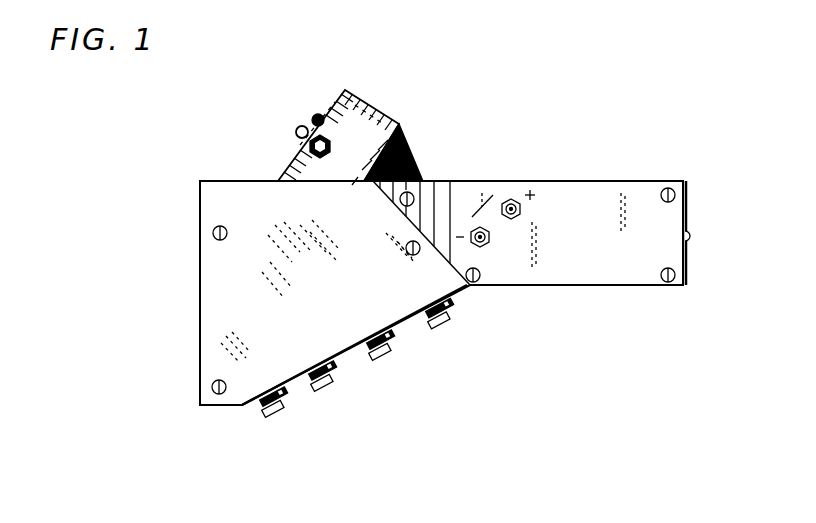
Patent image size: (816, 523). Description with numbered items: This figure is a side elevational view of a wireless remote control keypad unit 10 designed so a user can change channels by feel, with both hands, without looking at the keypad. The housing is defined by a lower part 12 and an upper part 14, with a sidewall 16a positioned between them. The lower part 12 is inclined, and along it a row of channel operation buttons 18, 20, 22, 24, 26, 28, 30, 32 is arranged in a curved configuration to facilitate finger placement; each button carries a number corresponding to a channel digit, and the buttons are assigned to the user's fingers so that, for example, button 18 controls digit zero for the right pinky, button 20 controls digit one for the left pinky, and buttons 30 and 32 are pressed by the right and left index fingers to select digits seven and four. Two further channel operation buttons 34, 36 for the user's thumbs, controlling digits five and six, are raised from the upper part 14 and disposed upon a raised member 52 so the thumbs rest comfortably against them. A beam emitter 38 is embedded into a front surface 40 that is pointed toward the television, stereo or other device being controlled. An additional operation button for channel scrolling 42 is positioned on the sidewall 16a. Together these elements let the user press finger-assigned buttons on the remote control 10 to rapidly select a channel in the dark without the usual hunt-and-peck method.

The wireless remote control keypad unit 10 is at (516, 143).
The lower part 12 is at (467, 285).
The upper part 14 is at (615, 181).
The sidewall 16a is at (590, 256).
The channel operation button 18 is at (262, 421).
The channel operation button 20 is at (284, 404).
The channel operation button 22 is at (312, 396).
The channel operation button 24 is at (333, 378).
The channel operation button 26 is at (370, 364).
The channel operation button 28 is at (390, 347).
The channel operation button 30 is at (430, 333).
The channel operation button 32 is at (450, 316).
The channel operation button 34 is at (318, 114).
The channel operation button 36 is at (297, 128).
The beam emitter 38 is at (690, 236).
The front surface 40 is at (684, 262).
The channel scrolling button 42 is at (468, 210).
The raised member 52 is at (380, 116).